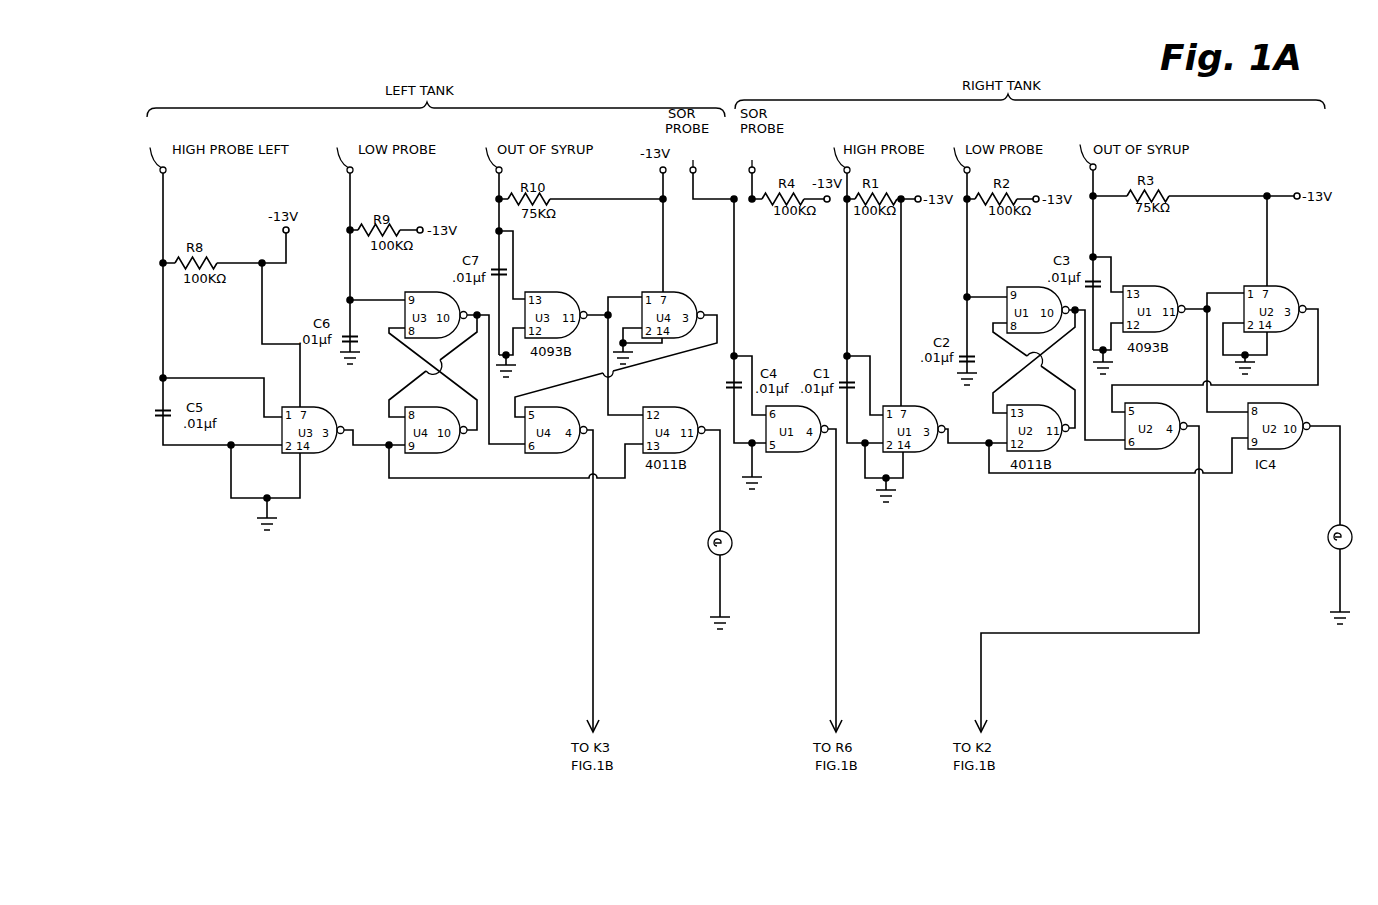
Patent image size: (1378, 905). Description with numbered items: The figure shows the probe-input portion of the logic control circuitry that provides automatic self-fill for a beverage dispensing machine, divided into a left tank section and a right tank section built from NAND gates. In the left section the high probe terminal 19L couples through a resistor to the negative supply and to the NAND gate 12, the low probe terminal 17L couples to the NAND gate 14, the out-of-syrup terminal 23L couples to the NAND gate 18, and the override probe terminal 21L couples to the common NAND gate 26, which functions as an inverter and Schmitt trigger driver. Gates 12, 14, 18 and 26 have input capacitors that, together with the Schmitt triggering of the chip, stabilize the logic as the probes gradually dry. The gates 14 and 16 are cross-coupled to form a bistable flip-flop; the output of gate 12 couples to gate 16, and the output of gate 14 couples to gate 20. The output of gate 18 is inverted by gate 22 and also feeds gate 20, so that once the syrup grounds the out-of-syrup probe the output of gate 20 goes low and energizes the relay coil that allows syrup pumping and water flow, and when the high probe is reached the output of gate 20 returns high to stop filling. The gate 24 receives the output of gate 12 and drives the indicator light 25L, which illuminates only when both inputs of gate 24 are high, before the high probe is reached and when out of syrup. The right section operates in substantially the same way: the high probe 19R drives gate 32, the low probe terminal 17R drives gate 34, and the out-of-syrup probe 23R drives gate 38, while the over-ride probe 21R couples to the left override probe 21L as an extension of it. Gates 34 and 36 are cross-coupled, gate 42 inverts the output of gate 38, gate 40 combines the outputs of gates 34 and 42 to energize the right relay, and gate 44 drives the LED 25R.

The NAND gate 12 is at (319, 407).
The NAND gate 14 is at (443, 292).
The NAND gate 16 is at (440, 453).
The NAND gate 18 is at (570, 292).
The NAND gate 20 is at (547, 453).
The NAND gate 22 is at (681, 292).
The NAND gate 24 is at (685, 398).
The common NAND gate 26 is at (782, 456).
The NAND gate 32 is at (919, 404).
The NAND gate 34 is at (1035, 287).
The NAND gate 36 is at (1024, 404).
The NAND gate 38 is at (1170, 286).
The NAND gate 40 is at (1160, 399).
The NAND gate 42 is at (1278, 288).
The NAND gate 44 is at (1290, 399).
The high probe terminal 19L is at (162, 148).
The low probe terminal 17L is at (348, 148).
The out-of-syrup terminal 23L is at (485, 148).
The override probe terminal 21L is at (698, 153).
The over-ride probe 21R is at (761, 153).
The high probe 19R is at (825, 152).
The low probe terminal 17R is at (961, 148).
The out-of-syrup probe 23R is at (1078, 146).
The indicator light 25L is at (708, 553).
The LED 25R is at (1347, 522).